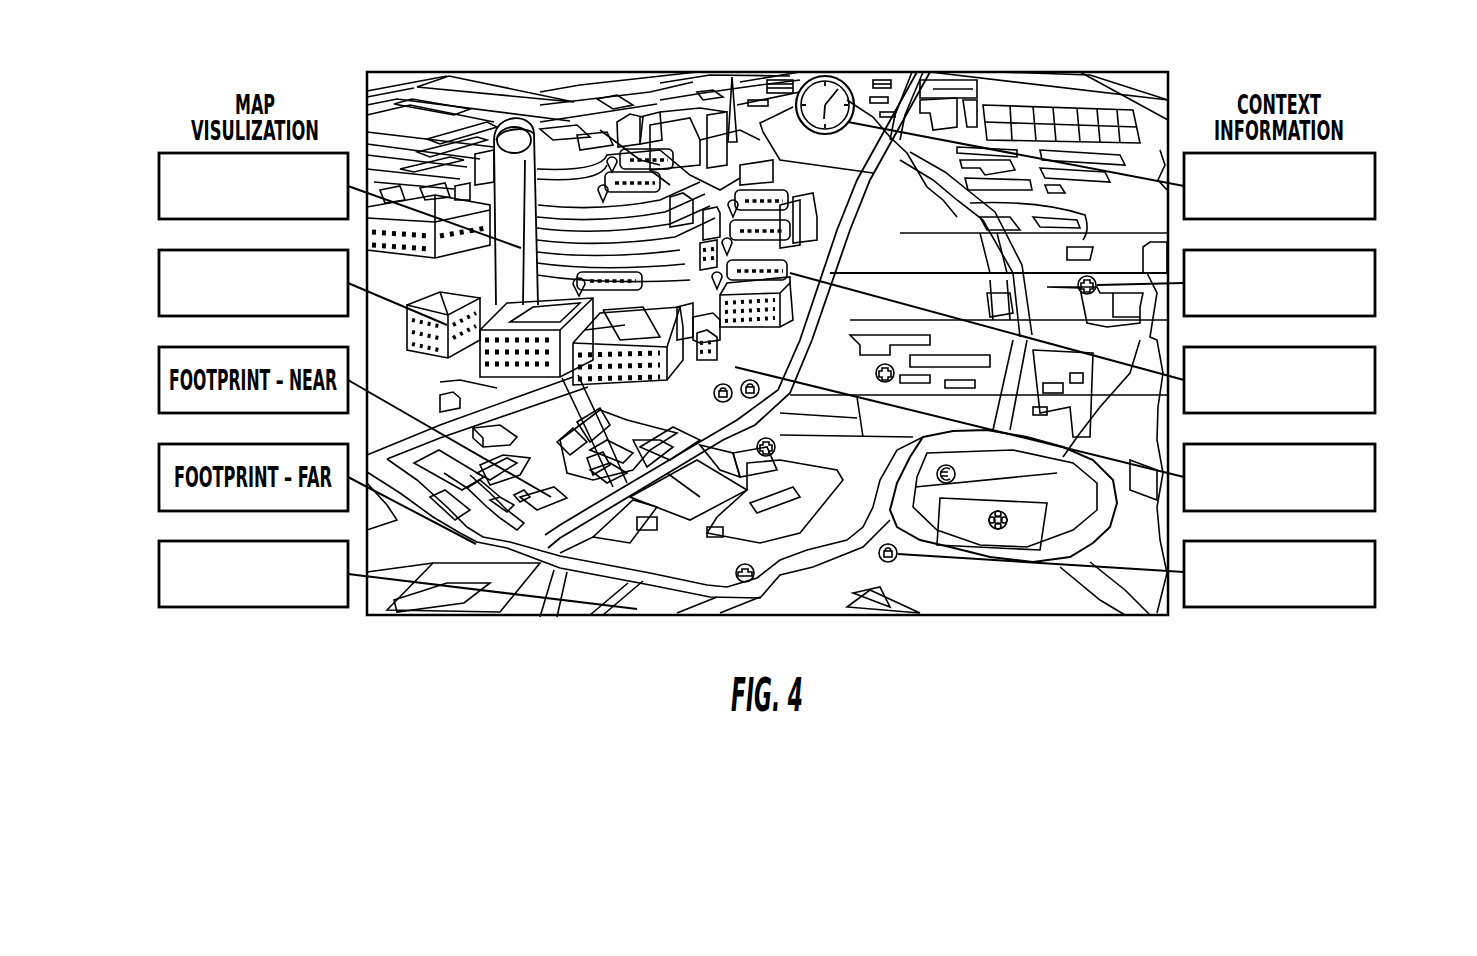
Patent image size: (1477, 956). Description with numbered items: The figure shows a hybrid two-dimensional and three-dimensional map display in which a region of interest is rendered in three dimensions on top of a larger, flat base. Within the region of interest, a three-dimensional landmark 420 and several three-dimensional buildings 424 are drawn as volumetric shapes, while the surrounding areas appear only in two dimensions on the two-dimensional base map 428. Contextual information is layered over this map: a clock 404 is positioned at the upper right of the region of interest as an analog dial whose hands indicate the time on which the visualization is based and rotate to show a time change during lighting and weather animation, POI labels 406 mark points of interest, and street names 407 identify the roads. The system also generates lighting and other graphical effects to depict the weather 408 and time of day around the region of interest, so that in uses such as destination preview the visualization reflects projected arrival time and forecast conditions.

The clock 404 is at (856, 88).
The POI labels 406 is at (1376, 283).
The street names 407 is at (1376, 573).
The weather 408 is at (1376, 477).
The 3D landmark 420 is at (159, 186).
The 3D buildings 424 is at (159, 284).
The 2D base map 428 is at (159, 575).